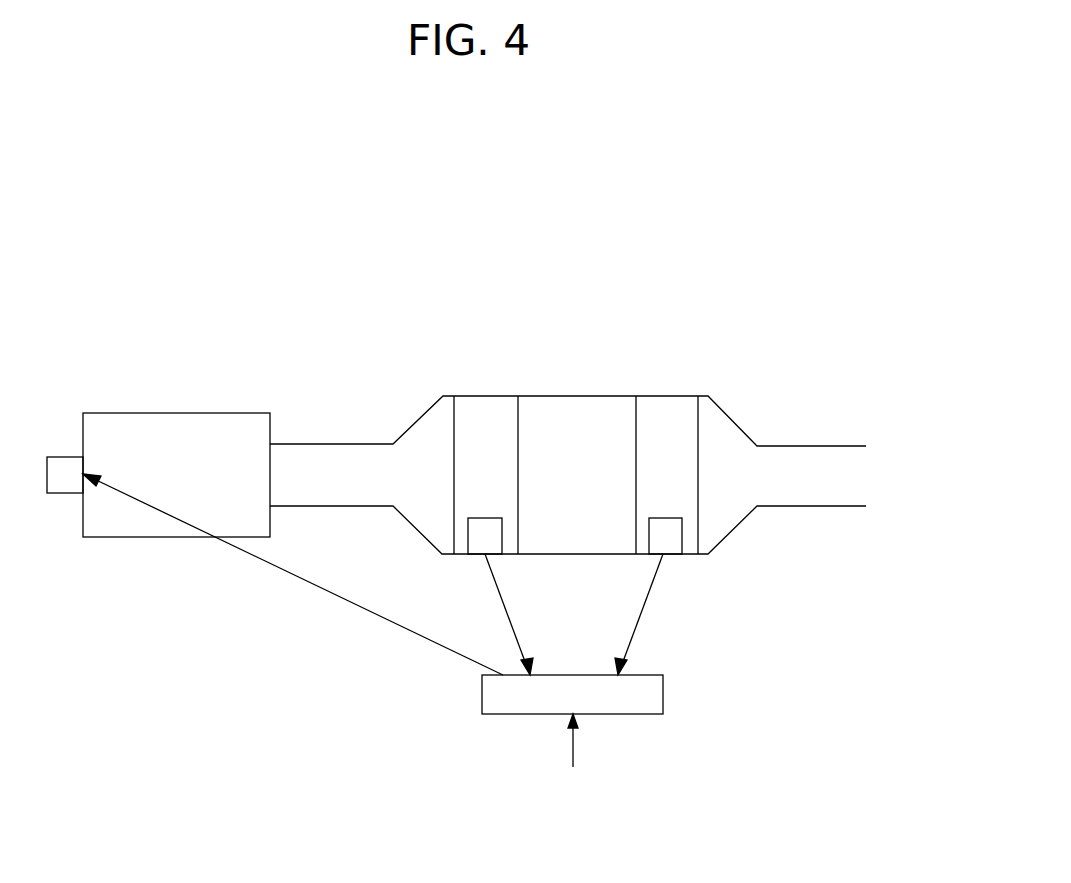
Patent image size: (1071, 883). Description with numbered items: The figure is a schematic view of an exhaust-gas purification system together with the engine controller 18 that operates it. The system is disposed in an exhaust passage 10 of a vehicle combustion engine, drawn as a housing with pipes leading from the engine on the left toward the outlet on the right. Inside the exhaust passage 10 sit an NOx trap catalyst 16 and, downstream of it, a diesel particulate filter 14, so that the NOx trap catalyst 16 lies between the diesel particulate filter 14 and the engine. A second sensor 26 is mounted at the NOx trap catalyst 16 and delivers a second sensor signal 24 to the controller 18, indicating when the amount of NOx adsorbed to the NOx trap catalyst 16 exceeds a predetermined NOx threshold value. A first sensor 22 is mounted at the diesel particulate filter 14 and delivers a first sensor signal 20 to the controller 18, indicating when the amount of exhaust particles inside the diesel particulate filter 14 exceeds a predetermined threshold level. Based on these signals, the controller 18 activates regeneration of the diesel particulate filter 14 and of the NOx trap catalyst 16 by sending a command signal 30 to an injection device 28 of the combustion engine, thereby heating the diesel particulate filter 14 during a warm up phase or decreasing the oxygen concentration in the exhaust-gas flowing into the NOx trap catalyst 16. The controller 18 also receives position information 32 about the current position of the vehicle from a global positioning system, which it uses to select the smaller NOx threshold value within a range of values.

The exhaust passage 10 is at (423, 432).
The diesel particulate filter 14 is at (665, 416).
The NOx trap catalyst 16 is at (488, 416).
The engine controller 18 is at (663, 690).
The first sensor signal 20 is at (643, 618).
The first sensor 22 is at (682, 537).
The second sensor signal 24 is at (515, 628).
The second sensor 26 is at (502, 536).
The injection device 28 is at (65, 493).
The command signal 30 is at (312, 585).
The position information 32 is at (573, 748).